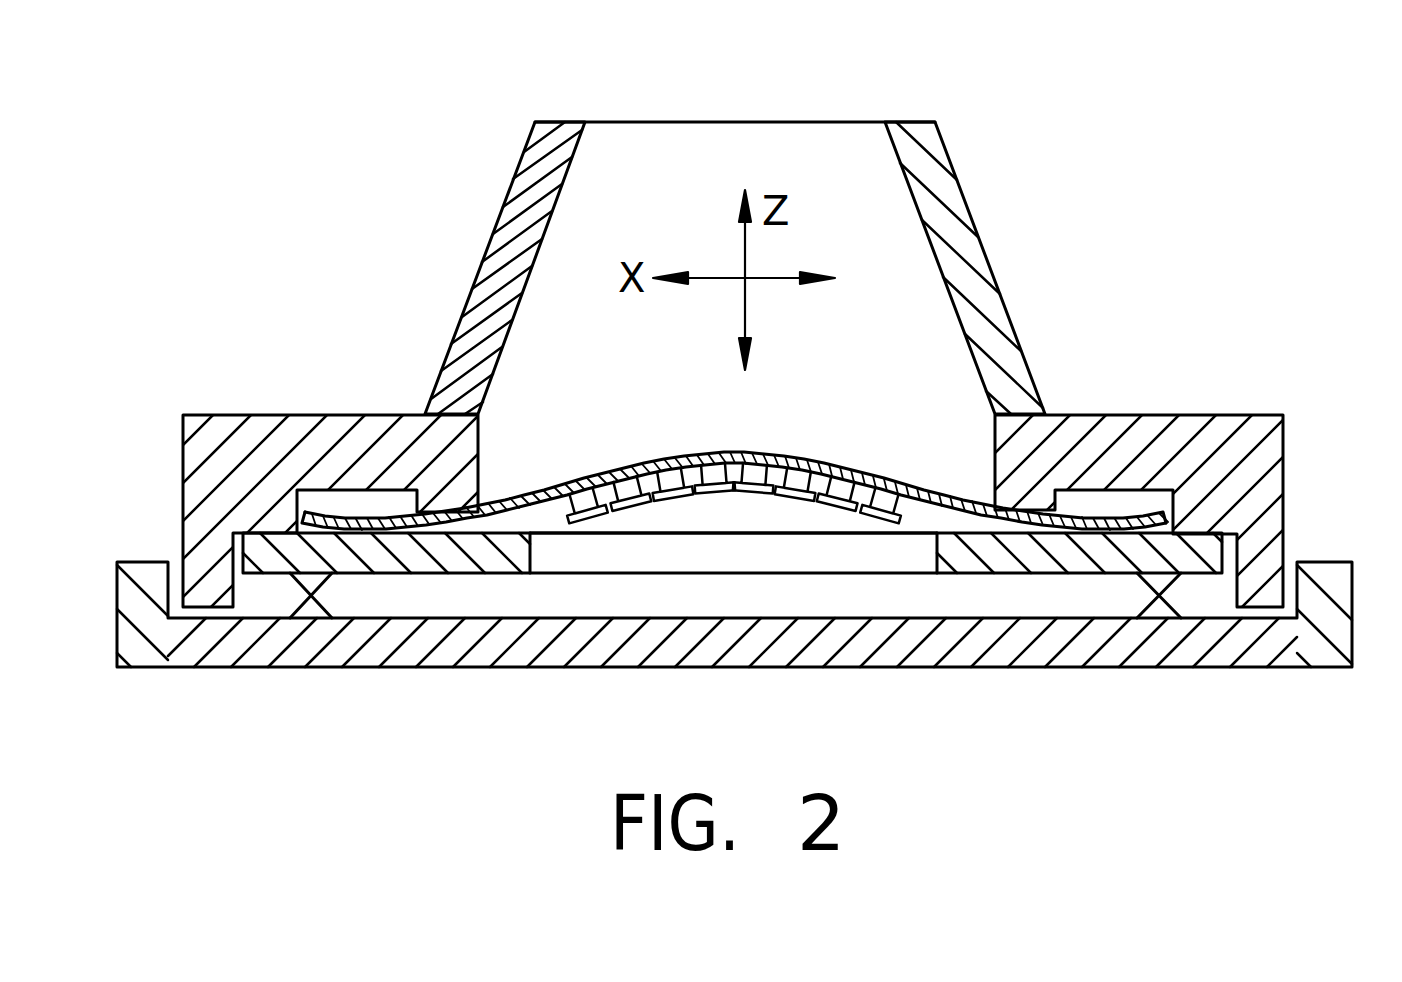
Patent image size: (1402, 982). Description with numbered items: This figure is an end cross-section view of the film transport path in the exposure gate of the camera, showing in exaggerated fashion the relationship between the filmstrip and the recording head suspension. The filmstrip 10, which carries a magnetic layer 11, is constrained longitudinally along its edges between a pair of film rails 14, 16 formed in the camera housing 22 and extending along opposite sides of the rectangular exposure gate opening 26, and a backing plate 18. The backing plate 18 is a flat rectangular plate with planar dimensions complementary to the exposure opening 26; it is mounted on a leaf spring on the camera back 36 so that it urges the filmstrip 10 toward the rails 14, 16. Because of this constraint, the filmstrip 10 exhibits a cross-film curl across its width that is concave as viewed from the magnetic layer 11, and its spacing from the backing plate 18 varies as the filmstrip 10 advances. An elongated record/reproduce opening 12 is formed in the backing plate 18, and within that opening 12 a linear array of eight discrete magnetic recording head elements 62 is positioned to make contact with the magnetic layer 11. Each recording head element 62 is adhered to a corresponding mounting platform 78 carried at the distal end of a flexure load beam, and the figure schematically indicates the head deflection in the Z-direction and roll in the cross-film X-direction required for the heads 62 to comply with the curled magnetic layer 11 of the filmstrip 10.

The filmstrip 10 is at (722, 420).
The magnetic layer 11 is at (950, 546).
The record/reproduce opening 12 is at (582, 578).
The film rail 14 is at (476, 508).
The film rail 16 is at (1002, 503).
The backing plate 18 is at (1105, 560).
The camera housing 22 is at (1230, 423).
The exposure gate opening 26 is at (727, 150).
The camera back 36 is at (803, 668).
The magnetic recording head elements 62 is at (800, 463).
The mounting platforms 78 is at (783, 578).